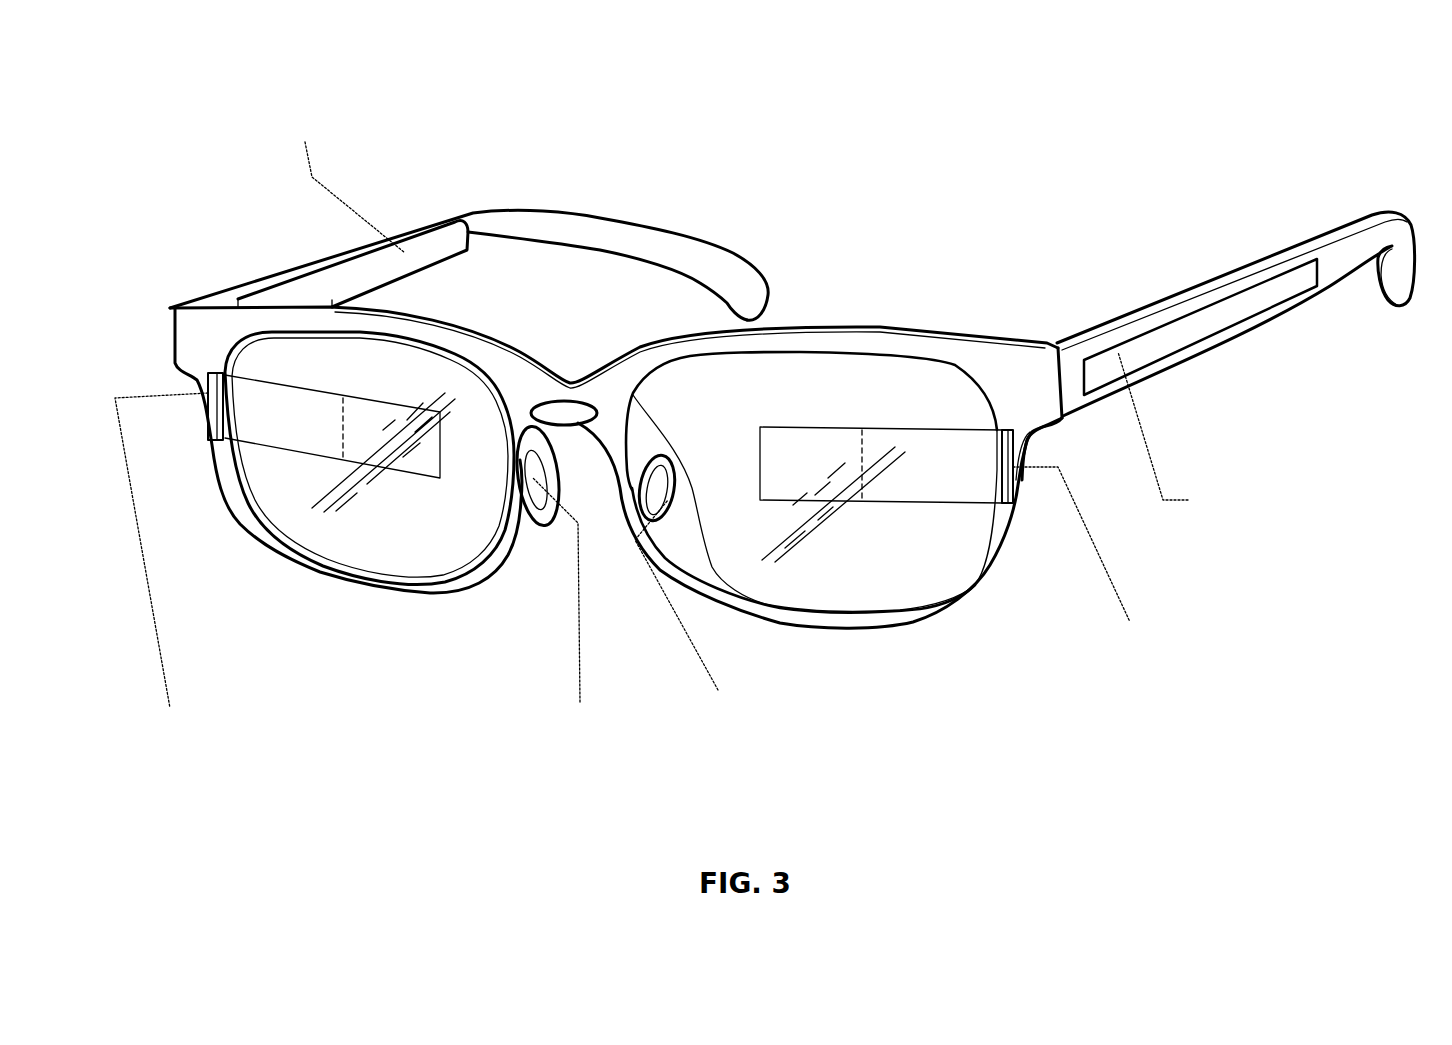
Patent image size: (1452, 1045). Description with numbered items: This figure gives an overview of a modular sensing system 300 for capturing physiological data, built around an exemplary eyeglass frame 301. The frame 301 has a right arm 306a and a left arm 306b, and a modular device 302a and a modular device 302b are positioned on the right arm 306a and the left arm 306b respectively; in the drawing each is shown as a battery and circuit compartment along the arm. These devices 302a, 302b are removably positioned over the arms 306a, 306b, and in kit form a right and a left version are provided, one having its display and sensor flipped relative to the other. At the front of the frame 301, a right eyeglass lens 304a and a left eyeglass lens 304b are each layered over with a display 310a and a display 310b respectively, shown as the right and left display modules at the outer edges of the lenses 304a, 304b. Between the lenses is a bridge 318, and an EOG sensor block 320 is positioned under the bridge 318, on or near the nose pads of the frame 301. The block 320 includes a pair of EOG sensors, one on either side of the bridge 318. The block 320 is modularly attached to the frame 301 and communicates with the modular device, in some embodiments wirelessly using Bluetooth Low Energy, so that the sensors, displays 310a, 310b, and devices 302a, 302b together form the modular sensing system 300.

The modular sensing system 300 is at (789, 107).
The frame 301 is at (480, 218).
The modular device 302a is at (365, 272).
The modular device 302b is at (1183, 326).
The right eyeglass lens 304a is at (400, 546).
The left eyeglass lens 304b is at (873, 583).
The right arm 306a is at (572, 216).
The left arm 306b is at (1398, 213).
The display 310a is at (213, 413).
The display 310b is at (1013, 495).
The bridge 318 is at (562, 405).
The EOG sensor block 320 is at (532, 480).